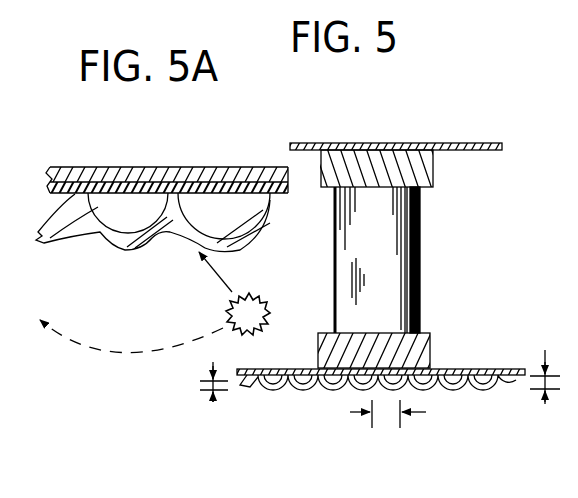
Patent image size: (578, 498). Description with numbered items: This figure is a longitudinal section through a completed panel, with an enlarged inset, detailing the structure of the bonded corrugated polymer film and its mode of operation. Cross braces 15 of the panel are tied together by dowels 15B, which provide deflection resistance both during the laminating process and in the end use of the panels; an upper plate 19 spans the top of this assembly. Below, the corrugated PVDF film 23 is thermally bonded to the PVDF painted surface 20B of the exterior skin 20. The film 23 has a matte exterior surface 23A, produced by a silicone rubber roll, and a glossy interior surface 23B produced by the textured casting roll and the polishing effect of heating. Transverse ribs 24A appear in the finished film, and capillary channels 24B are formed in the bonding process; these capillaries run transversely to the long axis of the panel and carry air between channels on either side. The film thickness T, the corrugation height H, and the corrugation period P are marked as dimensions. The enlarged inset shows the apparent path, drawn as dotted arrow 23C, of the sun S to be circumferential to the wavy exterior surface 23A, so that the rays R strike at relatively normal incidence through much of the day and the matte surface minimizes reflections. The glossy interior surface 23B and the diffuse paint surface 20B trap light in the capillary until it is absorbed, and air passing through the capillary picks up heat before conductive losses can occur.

In FIG. 5, the cross brace 15 is at (415, 163).
In FIG. 5, the dowel 15B is at (380, 208).
In FIG. 5, the upper plate 19 is at (440, 141).
In FIG. 5A, the exterior skin 20 is at (104, 177).
In FIG. 5, the exterior skin 20 is at (500, 369).
In FIG. 5A, the PVDF painted surface 20B is at (168, 186).
In FIG. 5, the corrugated PVDF film 23 is at (477, 379).
In FIG. 5A, the matte exterior surface 23A is at (118, 247).
In FIG. 5A, the glossy interior surface 23B is at (243, 217).
In FIG. 5A, the apparent path of the sun 23C is at (131, 347).
In FIG. 5, the transverse rib 24A is at (292, 378).
In FIG. 5, the capillary channel 24B is at (430, 378).
In FIG. 5A, the rays R is at (222, 272).
In FIG. 5A, the sun S is at (248, 314).
In FIG. 5, the height of the corrugation H is at (545, 364).
In FIG. 5, the film thickness T is at (214, 399).
In FIG. 5, the period of the corrugation P is at (378, 413).